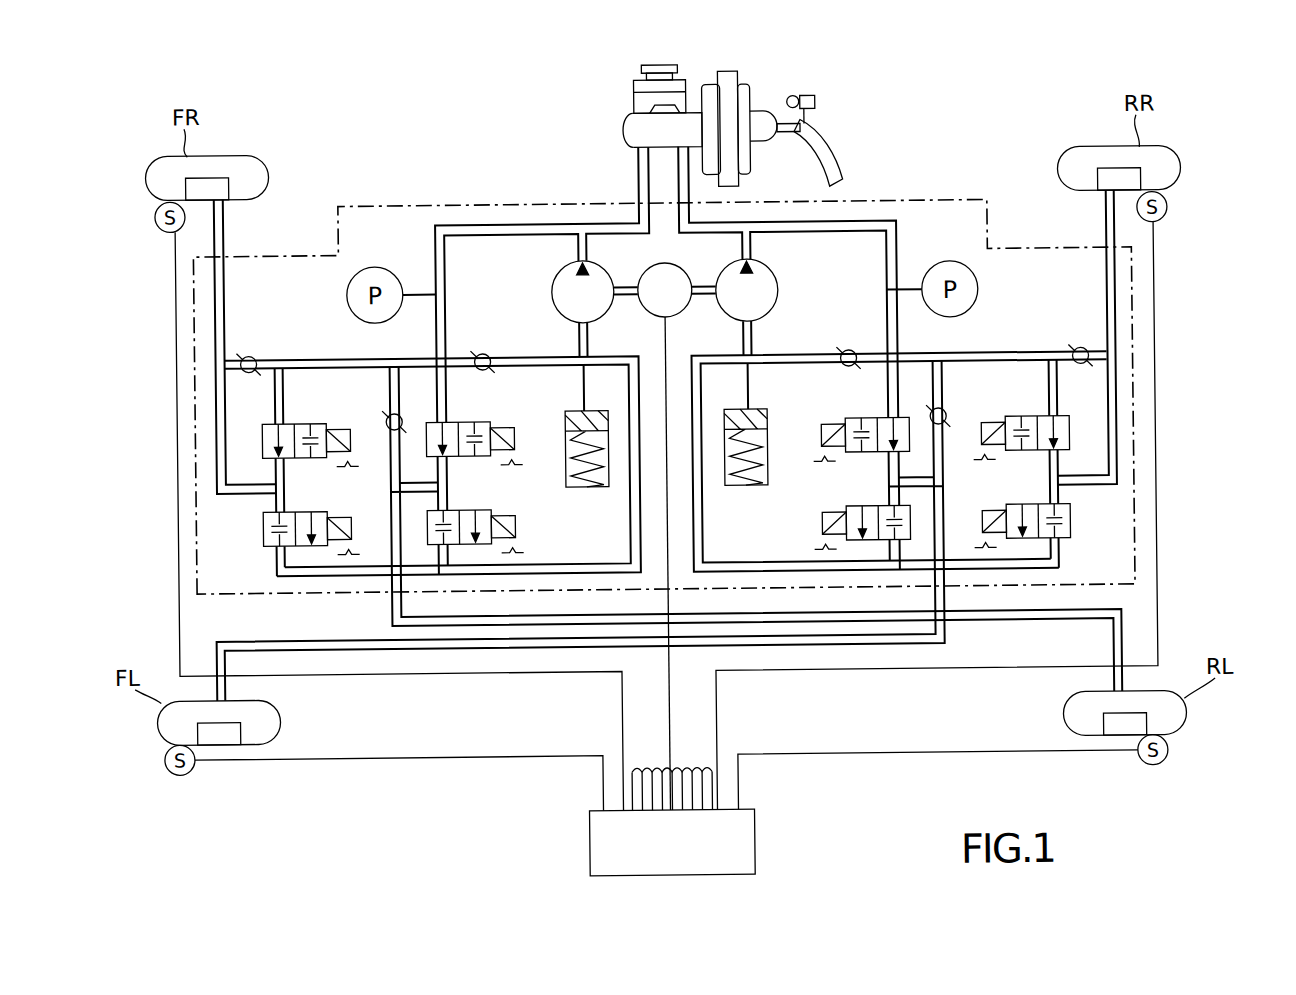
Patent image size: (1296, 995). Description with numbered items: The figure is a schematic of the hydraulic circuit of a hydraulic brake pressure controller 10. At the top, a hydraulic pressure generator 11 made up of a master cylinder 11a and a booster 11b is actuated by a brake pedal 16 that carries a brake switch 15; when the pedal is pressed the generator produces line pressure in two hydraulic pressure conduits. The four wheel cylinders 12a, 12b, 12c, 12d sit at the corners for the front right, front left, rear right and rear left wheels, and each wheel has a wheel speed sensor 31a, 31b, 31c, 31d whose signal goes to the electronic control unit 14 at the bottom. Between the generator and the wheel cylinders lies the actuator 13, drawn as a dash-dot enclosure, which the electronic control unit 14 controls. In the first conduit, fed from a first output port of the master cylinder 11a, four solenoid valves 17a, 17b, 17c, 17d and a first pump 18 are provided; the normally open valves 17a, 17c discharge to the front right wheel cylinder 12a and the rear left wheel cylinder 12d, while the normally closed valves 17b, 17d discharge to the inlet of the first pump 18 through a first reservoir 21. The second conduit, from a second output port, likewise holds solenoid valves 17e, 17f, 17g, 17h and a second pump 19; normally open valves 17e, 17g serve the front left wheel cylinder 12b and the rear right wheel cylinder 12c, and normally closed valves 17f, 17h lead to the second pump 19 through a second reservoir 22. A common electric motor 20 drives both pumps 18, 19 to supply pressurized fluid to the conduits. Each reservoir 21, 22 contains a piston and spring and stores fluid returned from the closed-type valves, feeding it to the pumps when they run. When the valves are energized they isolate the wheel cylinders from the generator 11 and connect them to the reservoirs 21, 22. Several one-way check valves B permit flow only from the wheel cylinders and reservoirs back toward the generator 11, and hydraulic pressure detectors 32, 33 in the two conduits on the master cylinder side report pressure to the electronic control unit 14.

The hydraulic brake pressure controller 10 is at (1205, 101).
The hydraulic pressure generator 11 is at (627, 111).
The master cylinder 11a is at (634, 148).
The booster 11b is at (750, 172).
The wheel cylinder 12a is at (228, 193).
The wheel cylinder 12b is at (238, 690).
The wheel cylinder 12c is at (1102, 193).
The wheel cylinder 12d is at (1103, 695).
The actuator 13 is at (935, 200).
The electronic control unit 14 is at (752, 840).
The brake switch 15 is at (810, 100).
The brake pedal 16 is at (838, 161).
The solenoid valve 17a is at (316, 420).
The solenoid valve 17b is at (316, 508).
The solenoid valve 17c is at (488, 420).
The solenoid valve 17d is at (488, 508).
The solenoid valve 17e is at (847, 420).
The solenoid valve 17f is at (848, 508).
The solenoid valve 17g is at (1014, 420).
The solenoid valve 17h is at (1006, 514).
The first pump 18 is at (556, 282).
The second pump 19 is at (777, 284).
The electric motor 20 is at (647, 273).
The first reservoir 21 is at (588, 487).
The second reservoir 22 is at (747, 487).
The wheel speed sensor 31a is at (162, 226).
The wheel speed sensor 31b is at (166, 770).
The wheel speed sensor 31c is at (1168, 224).
The wheel speed sensor 31d is at (1164, 770).
The hydraulic pressure detector 32 is at (350, 291).
The hydraulic pressure detector 33 is at (980, 285).
The one-way check valve B is at (252, 353).